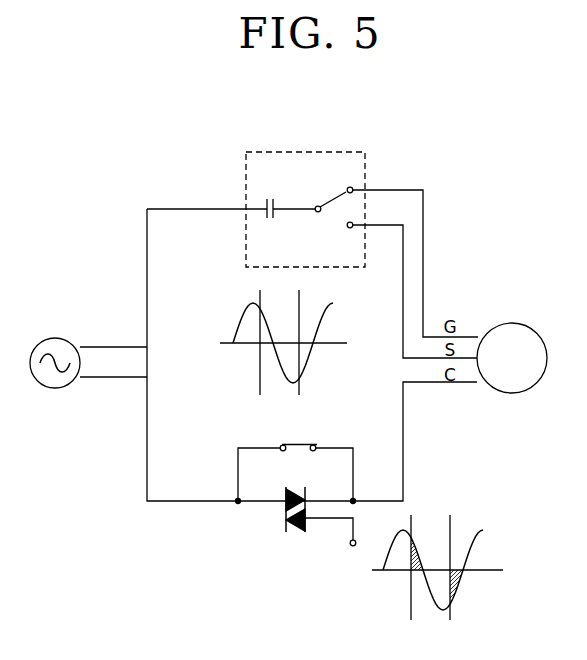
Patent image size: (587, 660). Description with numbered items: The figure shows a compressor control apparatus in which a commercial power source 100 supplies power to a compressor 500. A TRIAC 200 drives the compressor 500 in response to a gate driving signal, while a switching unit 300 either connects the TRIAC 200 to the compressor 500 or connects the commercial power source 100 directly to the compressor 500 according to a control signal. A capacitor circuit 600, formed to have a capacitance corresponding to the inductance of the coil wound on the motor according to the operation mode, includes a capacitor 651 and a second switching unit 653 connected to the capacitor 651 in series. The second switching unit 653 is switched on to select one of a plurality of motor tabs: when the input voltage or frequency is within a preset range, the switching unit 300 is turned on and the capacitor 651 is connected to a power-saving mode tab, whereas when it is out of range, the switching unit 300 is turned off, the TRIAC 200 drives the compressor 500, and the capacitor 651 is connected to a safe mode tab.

The commercial power source 100 is at (55, 338).
The TRIAC 200 is at (283, 524).
The switching unit 300 is at (291, 444).
The compressor 500 is at (509, 323).
The capacitor circuit 600 is at (304, 150).
The capacitor 651 is at (270, 198).
The second switching unit 653 is at (325, 203).